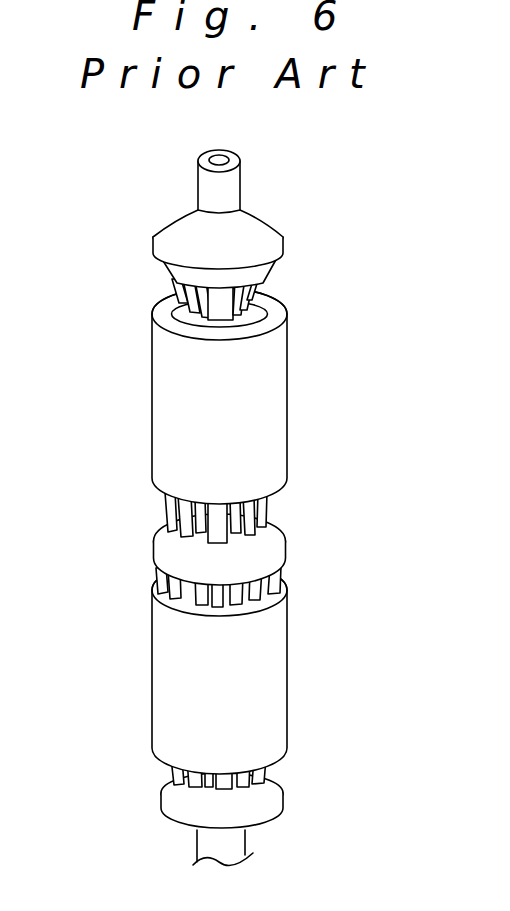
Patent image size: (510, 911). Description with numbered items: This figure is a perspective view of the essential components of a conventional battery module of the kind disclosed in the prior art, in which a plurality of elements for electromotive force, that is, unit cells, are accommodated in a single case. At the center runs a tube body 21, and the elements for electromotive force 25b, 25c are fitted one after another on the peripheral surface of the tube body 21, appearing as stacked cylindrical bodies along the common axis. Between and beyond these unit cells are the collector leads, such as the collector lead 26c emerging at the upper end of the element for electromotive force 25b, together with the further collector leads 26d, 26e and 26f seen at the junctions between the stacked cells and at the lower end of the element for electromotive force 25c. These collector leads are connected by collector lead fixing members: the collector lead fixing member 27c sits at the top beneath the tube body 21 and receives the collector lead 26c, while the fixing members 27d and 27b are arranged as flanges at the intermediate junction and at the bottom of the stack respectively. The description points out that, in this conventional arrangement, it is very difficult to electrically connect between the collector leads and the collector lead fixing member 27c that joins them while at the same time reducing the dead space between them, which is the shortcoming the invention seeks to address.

The tube body 21 is at (241, 171).
The collector lead fixing member 27c is at (278, 230).
The collector lead 26c is at (170, 290).
The element for electromotive force 25b is at (287, 410).
The gear teeth 26d is at (165, 512).
The disk flange 27d is at (283, 522).
The gear teeth 26e is at (158, 576).
The element for electromotive force 25c is at (287, 692).
The gear teeth 26f is at (163, 790).
The disk flange 27b is at (285, 792).